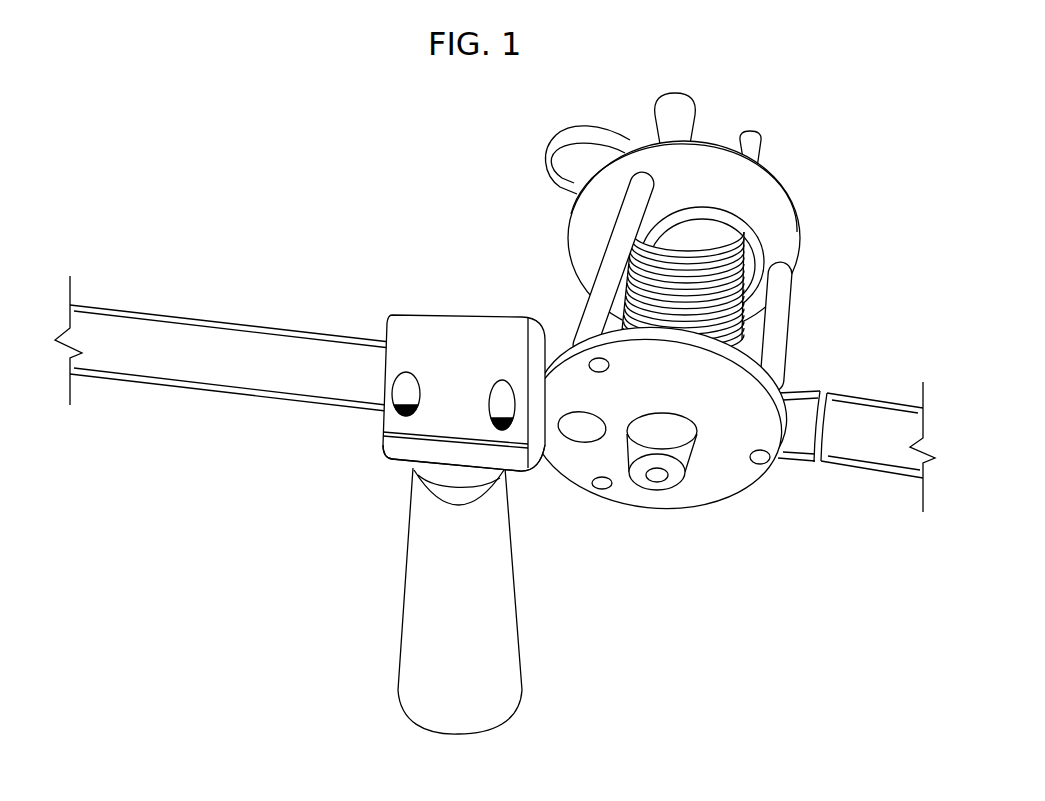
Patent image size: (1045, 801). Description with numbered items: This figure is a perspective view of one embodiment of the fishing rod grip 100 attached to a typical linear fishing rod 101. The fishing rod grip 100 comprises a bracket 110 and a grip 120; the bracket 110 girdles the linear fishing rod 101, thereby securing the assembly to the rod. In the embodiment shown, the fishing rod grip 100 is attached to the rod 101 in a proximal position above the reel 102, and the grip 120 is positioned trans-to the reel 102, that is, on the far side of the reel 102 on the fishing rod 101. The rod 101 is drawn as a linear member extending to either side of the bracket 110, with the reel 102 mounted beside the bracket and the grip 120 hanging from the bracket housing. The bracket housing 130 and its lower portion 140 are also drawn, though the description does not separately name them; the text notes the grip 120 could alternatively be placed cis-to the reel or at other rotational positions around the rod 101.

The fishing rod grip 100 is at (458, 273).
The linear fishing rod 101 is at (893, 398).
The reel 102 is at (656, 505).
The bracket 110 is at (335, 315).
The grip 120 is at (404, 607).
The housing body 130 is at (433, 316).
The lower housing portion 140 is at (382, 440).